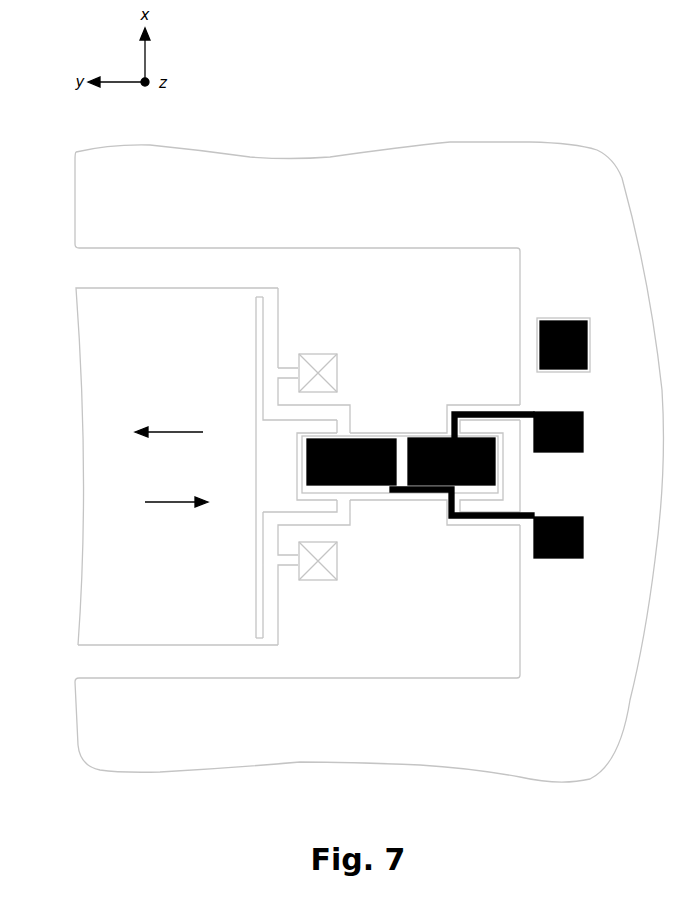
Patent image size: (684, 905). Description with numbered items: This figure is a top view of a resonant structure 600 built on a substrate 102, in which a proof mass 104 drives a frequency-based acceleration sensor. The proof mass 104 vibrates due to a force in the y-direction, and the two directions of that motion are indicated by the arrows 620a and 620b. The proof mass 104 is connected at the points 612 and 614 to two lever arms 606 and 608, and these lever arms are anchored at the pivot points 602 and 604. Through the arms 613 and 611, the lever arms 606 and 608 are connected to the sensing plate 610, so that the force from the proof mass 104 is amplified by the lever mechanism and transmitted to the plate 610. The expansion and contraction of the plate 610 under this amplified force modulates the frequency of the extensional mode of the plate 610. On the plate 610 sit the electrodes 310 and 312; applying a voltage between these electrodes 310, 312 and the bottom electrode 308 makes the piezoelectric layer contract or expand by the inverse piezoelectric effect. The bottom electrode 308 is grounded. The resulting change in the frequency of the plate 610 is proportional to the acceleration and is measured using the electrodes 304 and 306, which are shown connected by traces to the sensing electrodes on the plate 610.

The resonant structure 600 is at (546, 86).
The substrate 102 is at (268, 178).
The proof mass 104 is at (92, 395).
The connection point 612 is at (260, 296).
The lever arm 606 is at (277, 327).
The pivot point 602 is at (322, 355).
The upper connecting arm 613 is at (343, 410).
The sensing plate 610 is at (381, 433).
The lower connecting arm 611 is at (347, 521).
The pivot point 604 is at (325, 582).
The lever arm 608 is at (275, 620).
The connection point 614 is at (258, 641).
The electrode 310 is at (351, 462).
The electrode 312 is at (462, 465).
The bottom electrode 308 is at (590, 333).
The electrode 304 is at (585, 422).
The electrode 306 is at (585, 528).
The motion direction 620a is at (176, 493).
The motion direction 620b is at (169, 423).